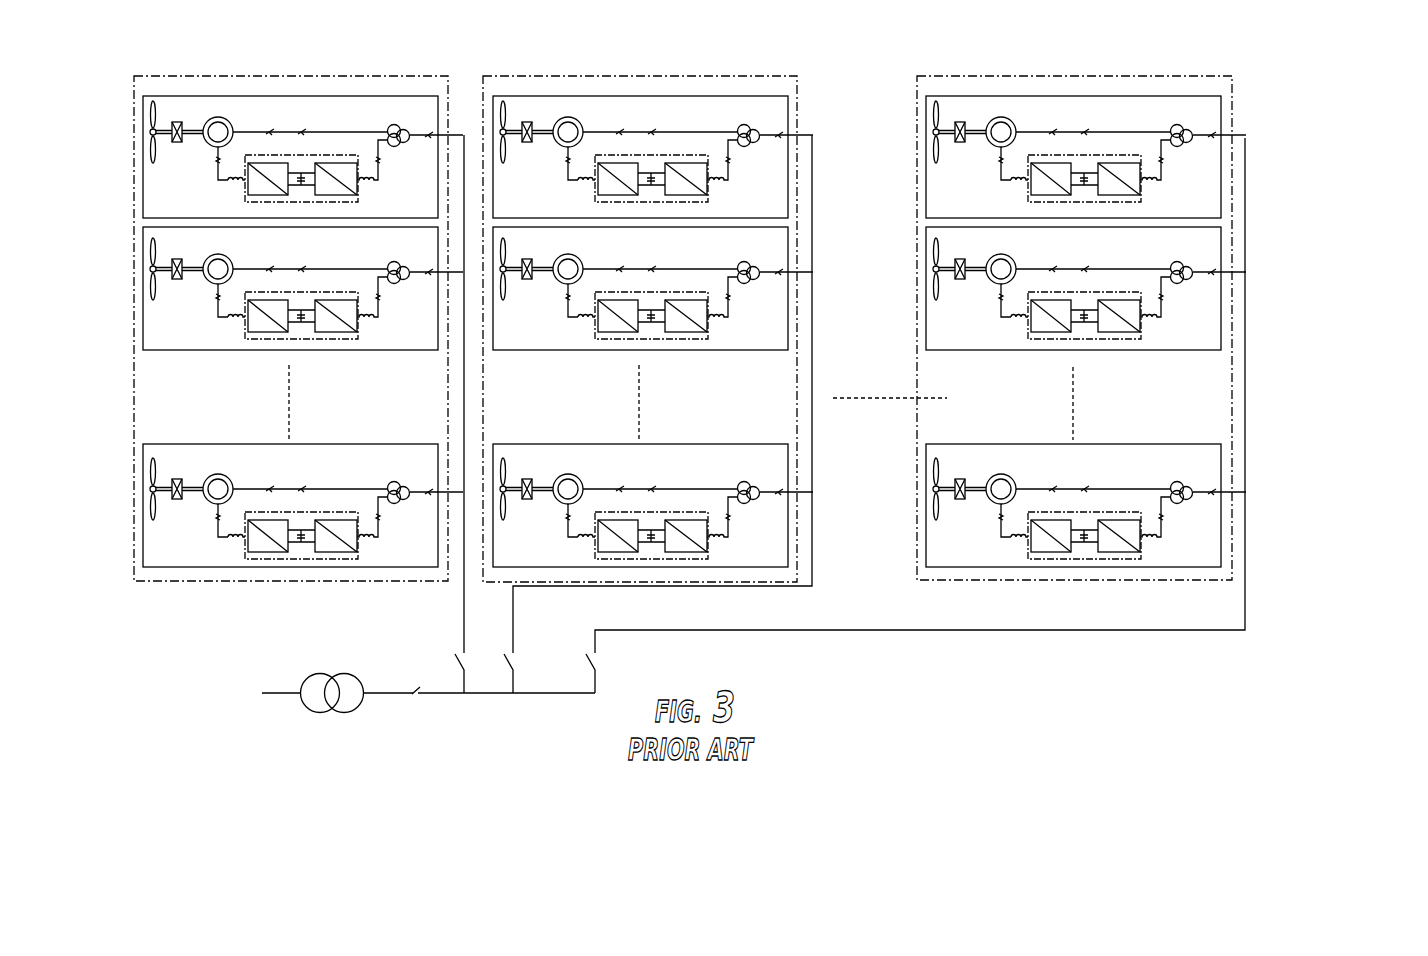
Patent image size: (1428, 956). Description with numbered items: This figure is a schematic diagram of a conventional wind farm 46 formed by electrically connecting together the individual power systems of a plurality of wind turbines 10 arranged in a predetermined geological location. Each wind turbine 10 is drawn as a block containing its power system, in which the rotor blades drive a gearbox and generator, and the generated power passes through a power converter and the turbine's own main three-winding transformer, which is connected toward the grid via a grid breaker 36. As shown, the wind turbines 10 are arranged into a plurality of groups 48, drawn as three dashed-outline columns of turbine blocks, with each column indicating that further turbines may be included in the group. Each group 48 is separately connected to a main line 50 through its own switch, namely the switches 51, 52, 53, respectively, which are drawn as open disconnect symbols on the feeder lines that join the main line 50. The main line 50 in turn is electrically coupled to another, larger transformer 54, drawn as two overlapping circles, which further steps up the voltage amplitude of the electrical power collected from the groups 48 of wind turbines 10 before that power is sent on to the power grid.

The wind turbine 10 is at (143, 170).
The grid breaker 36 is at (437, 119).
The wind farm 46 is at (1366, 128).
The groups 48 is at (198, 583).
The main line 50 is at (543, 697).
The switch 51 is at (452, 660).
The switch 52 is at (505, 660).
The switch 53 is at (582, 660).
The larger transformer 54 is at (330, 670).